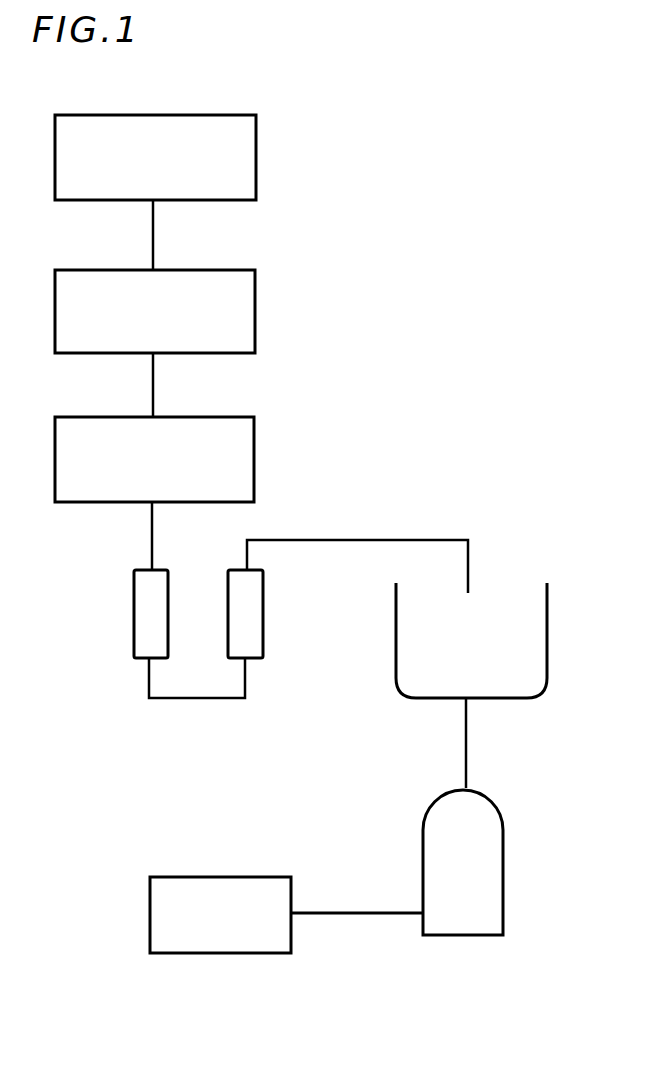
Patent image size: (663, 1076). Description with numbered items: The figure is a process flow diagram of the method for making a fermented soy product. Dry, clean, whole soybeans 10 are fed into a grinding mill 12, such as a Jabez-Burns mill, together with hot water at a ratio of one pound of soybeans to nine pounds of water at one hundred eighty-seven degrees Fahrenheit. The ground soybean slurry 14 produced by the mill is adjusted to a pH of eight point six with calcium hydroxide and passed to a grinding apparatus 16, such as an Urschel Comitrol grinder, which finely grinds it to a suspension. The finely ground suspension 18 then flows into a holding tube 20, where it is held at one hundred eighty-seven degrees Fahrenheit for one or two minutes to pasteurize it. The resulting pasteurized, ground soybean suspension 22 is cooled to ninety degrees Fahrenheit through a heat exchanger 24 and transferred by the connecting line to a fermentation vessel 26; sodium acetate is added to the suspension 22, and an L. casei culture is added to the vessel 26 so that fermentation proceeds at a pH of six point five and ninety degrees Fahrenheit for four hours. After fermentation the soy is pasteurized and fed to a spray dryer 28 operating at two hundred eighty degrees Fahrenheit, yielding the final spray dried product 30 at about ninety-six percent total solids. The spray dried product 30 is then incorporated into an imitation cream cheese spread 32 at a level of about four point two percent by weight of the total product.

The whole soybeans 10 is at (170, 167).
The grinding mill 12 is at (166, 325).
The ground soybean slurry 14 is at (153, 409).
The grinding apparatus 16 is at (174, 475).
The finely ground suspension 18 is at (151, 530).
The holding tube 20 is at (134, 617).
The pasteurized ground soybean suspension 22 is at (190, 700).
The heat exchanger 24 is at (268, 629).
The fermentation vessel 26 is at (548, 633).
The spray dryer 28 is at (505, 868).
The spray dried product 30 is at (347, 913).
The imitation cream cheese spread 32 is at (151, 877).